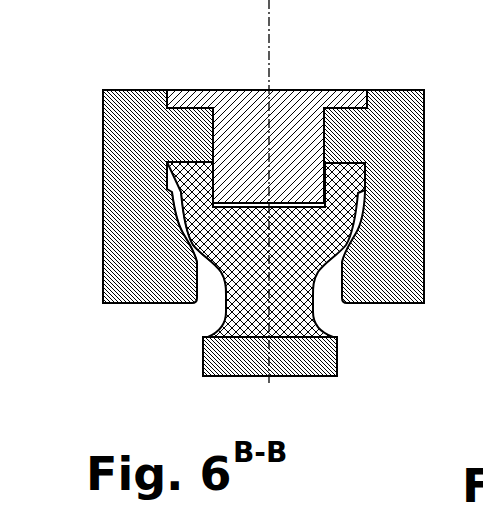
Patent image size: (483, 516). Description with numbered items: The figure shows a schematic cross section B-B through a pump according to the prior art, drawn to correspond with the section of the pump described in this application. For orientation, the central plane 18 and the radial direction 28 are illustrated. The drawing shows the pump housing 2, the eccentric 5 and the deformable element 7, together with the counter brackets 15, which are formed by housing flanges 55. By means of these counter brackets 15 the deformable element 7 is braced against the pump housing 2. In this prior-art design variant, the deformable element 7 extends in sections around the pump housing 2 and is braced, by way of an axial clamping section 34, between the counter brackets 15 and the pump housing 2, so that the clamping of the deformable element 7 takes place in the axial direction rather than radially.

The pump housing 2 is at (311, 90).
The eccentric 5 is at (335, 376).
The deformable element 7 is at (340, 221).
The counter brackets 15 is at (103, 150).
The central plane 18 is at (268, 72).
The radial direction 28 is at (268, 27).
The axial clamping section 34 is at (172, 196).
The housing flanges 55 is at (103, 182).